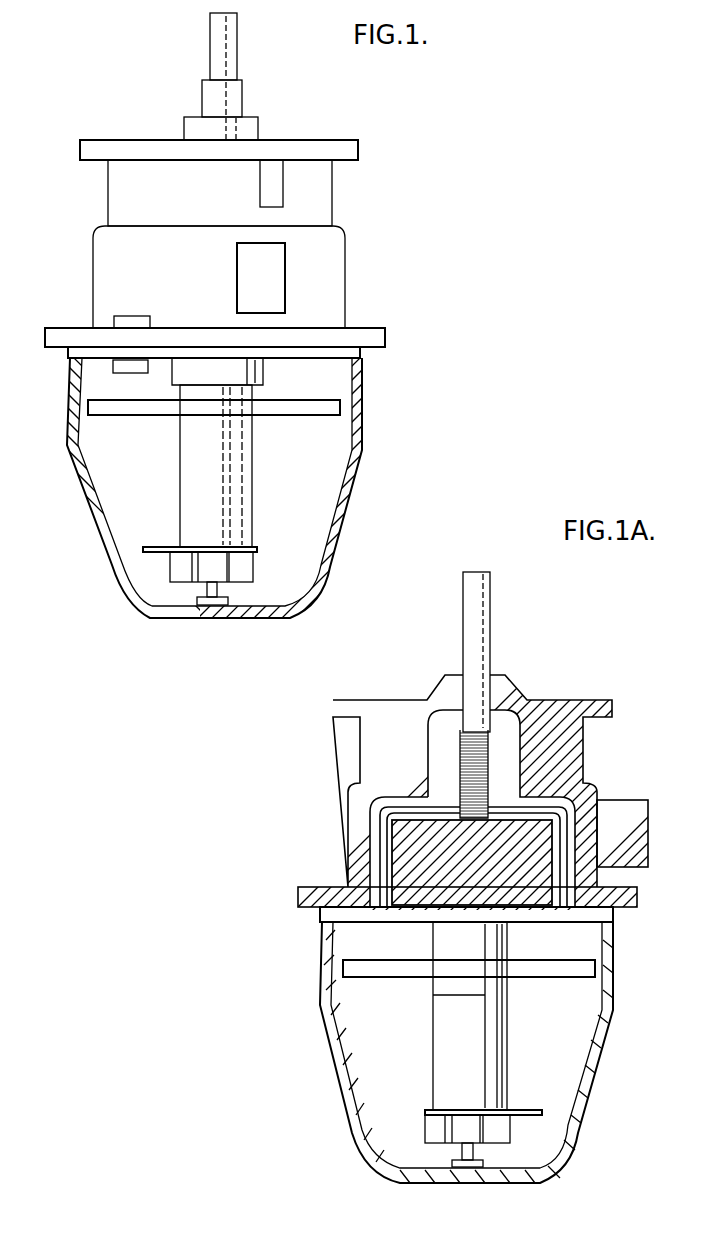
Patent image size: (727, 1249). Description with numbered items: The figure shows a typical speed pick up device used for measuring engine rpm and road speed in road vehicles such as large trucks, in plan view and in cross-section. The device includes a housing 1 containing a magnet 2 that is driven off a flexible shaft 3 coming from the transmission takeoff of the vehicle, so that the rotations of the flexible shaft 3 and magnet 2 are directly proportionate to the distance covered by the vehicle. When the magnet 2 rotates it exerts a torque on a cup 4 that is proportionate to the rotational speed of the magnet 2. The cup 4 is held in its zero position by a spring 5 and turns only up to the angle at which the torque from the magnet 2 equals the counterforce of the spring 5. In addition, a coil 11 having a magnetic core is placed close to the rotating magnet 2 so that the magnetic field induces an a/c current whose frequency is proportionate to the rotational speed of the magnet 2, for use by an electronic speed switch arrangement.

In FIG. 1, the housing 1 is at (357, 398).
In FIG. 1A, the housing 1 is at (583, 750).
In FIG. 1A, the magnet 2 is at (530, 886).
In FIG. 1, the flexible shaft 3 is at (231, 43).
In FIG. 1A, the flexible shaft 3 is at (491, 588).
In FIG. 1A, the cup 4 is at (322, 919).
In FIG. 1, the spring 5 is at (97, 411).
In FIG. 1A, the spring 5 is at (585, 977).
In FIG. 1A, the coil 11 is at (623, 811).